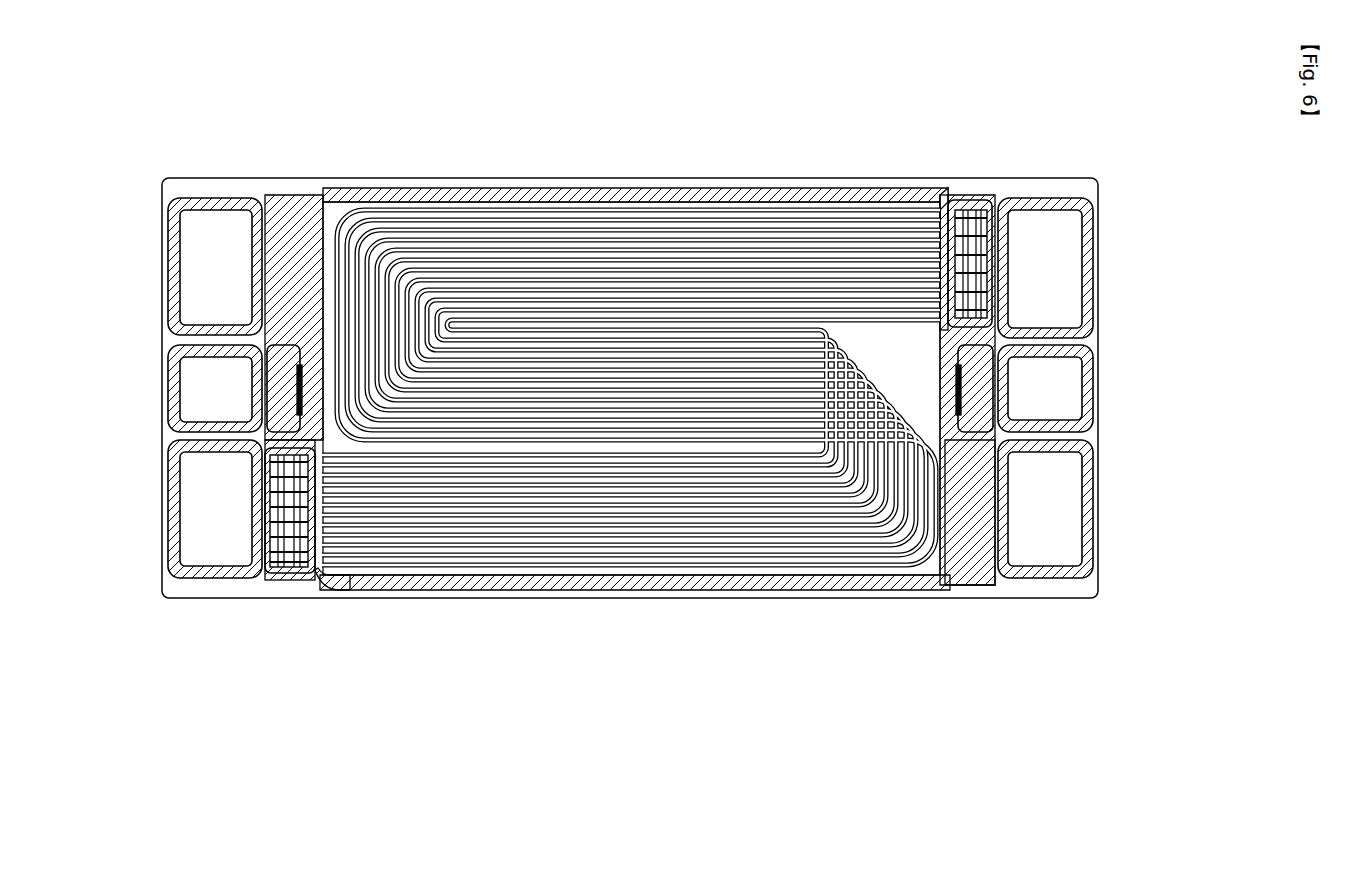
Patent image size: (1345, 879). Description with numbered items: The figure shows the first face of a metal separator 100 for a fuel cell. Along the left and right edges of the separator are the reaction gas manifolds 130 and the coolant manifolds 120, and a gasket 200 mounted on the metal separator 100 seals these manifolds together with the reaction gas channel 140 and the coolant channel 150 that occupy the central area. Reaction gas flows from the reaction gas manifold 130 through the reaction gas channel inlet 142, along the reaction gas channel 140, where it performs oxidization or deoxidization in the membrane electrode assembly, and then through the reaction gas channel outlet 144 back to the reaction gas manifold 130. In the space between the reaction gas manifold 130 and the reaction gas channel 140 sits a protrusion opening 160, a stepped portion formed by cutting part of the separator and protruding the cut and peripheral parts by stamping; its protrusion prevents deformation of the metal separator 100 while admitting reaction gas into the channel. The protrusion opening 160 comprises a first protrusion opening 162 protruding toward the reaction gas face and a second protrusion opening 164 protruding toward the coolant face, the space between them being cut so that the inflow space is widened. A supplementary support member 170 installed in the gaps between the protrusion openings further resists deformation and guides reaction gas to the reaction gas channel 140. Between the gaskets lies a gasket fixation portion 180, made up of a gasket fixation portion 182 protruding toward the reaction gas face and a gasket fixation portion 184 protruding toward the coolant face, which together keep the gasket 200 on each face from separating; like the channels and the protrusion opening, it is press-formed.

The metal separator 100 is at (742, 170).
The coolant manifold 120 is at (195, 390).
The reaction gas manifold 130 is at (195, 287).
The reaction gas channel 140 is at (642, 203).
The reaction gas channel inlet 142 is at (949, 190).
The reaction gas channel outlet 144 is at (257, 497).
The coolant channel 150 is at (527, 218).
The protrusion opening 160 is at (1013, 179).
The first protrusion opening 162 is at (992, 202).
The second protrusion opening 164 is at (968, 206).
The supplementary support member 170 is at (292, 572).
The gasket fixation portion 180 is at (630, 540).
The gasket fixation portion protruding to the reaction gas face 182 is at (305, 387).
The gasket fixation portion protruding to the coolant face 184 is at (336, 580).
The gasket 200 is at (965, 590).